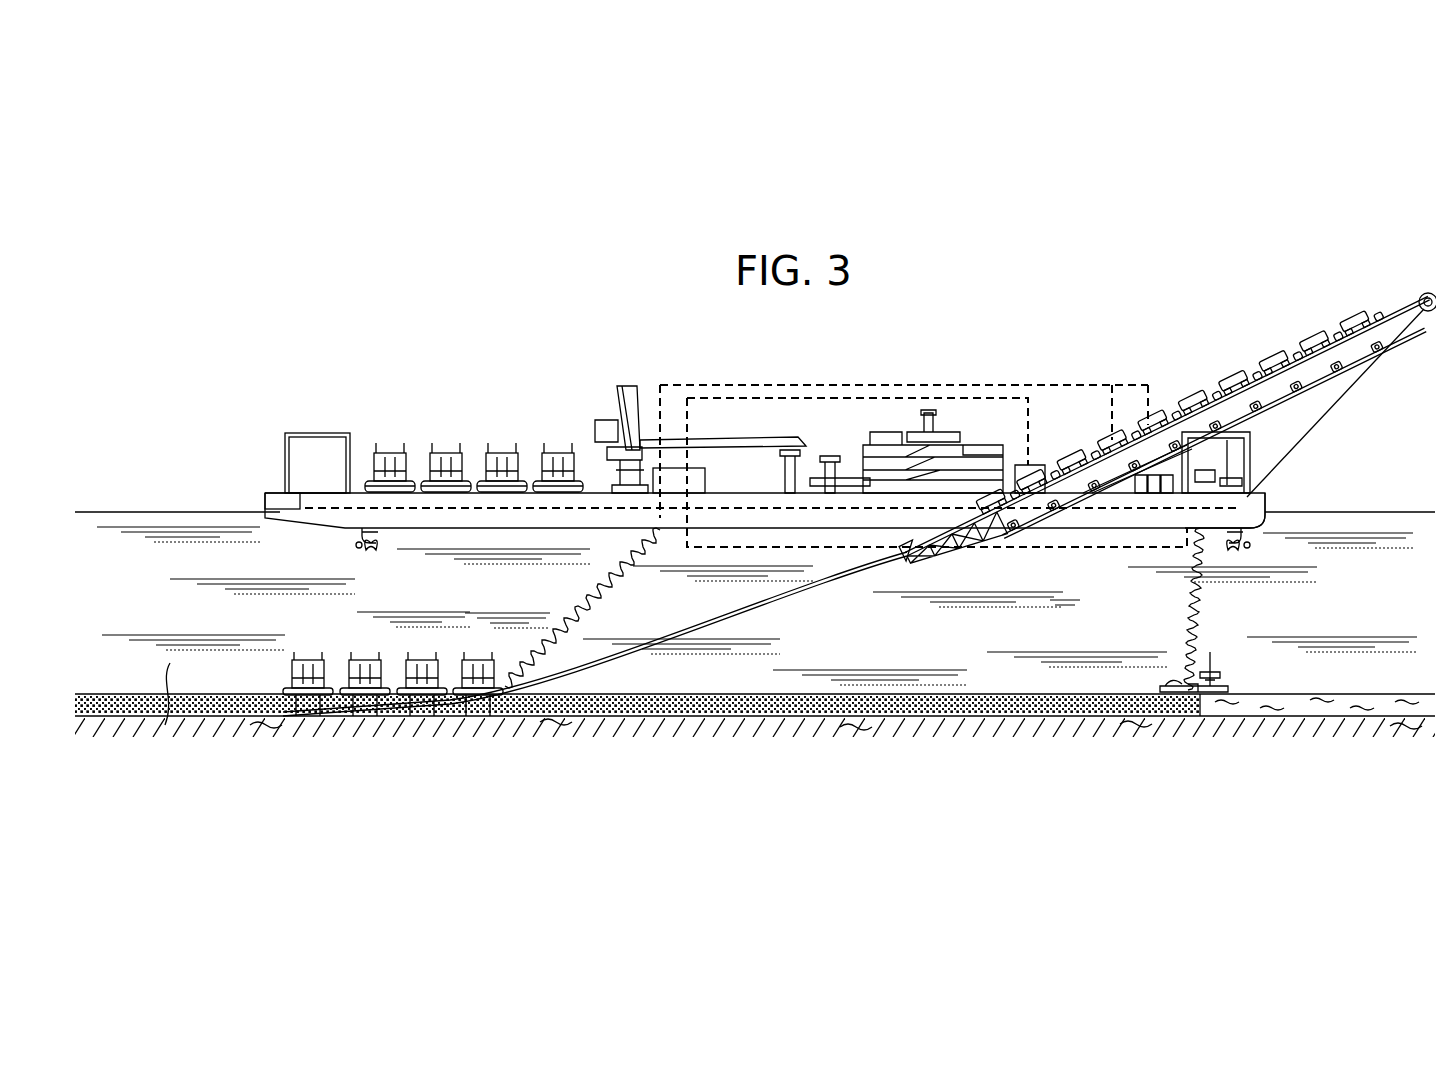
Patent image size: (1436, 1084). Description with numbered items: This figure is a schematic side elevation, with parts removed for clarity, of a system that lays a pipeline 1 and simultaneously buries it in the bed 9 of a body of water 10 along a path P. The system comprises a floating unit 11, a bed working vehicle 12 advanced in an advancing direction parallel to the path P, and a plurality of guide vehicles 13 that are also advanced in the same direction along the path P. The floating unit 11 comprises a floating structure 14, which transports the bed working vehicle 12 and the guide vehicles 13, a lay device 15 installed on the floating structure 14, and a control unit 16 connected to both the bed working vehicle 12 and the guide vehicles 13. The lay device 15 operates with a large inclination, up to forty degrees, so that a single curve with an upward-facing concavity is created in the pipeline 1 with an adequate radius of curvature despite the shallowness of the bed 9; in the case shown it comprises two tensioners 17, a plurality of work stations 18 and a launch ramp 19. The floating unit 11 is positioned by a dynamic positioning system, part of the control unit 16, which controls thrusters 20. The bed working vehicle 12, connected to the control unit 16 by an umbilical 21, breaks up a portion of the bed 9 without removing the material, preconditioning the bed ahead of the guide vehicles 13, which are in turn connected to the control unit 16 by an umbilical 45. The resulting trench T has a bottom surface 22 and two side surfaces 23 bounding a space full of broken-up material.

The pipeline 1 is at (838, 588).
The bed 9 is at (160, 683).
The body of water 10 is at (163, 515).
The floating unit 11 is at (270, 410).
The bed working vehicle 12 is at (1178, 683).
The guide vehicles 13 is at (390, 438).
The floating structure 14 is at (1248, 503).
The lay device 15 is at (1166, 413).
The control unit 16 is at (705, 478).
The tensioners 17 is at (1172, 410).
The work stations 18 is at (1335, 318).
The launch ramp 19 is at (953, 540).
The thrusters 20 is at (352, 545).
The umbilical 21 is at (1192, 617).
The bottom surface 22 is at (968, 710).
The side surfaces 23 is at (1068, 716).
The umbilical 45 is at (570, 616).